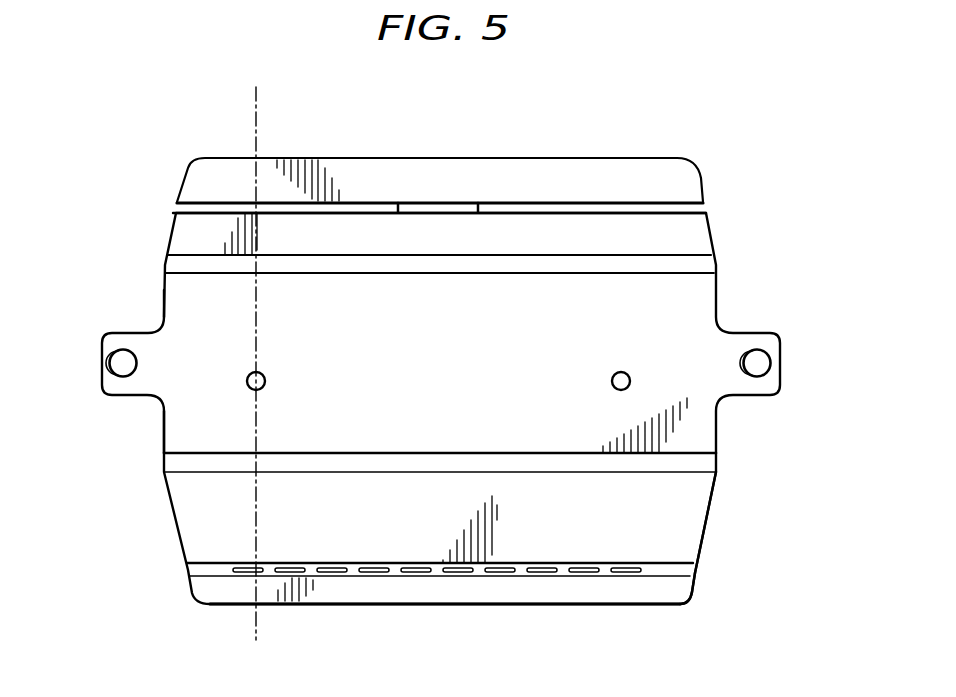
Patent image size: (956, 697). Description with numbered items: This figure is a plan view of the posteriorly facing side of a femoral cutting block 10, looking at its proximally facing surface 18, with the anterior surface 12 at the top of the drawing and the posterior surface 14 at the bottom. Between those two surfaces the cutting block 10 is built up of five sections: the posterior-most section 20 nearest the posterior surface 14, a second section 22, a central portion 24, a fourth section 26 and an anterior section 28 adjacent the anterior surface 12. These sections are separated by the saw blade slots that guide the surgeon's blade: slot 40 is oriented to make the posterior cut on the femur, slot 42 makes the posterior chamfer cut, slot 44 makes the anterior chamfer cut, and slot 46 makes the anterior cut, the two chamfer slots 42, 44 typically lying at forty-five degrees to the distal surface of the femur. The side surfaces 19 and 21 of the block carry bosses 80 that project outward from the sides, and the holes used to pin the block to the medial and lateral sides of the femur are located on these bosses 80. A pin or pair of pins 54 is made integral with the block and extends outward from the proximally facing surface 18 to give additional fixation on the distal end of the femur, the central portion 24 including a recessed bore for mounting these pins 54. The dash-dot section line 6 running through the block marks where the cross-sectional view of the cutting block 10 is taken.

The section line 6- 6 is at (256, 87).
The cutting block 10 is at (530, 127).
The anterior surface 12 is at (647, 157).
The posterior surface 14 is at (595, 605).
The proximally facing surface 18 is at (703, 433).
The side surface 19 is at (707, 510).
The section 20 is at (682, 604).
The side surface 21 is at (163, 445).
The section 22 is at (690, 533).
The central portion 24 is at (157, 333).
The section 26 is at (173, 238).
The section 28 is at (188, 170).
The saw blade slot 40 is at (187, 568).
The saw blade slot 42 is at (165, 462).
The saw blade slot 44 is at (172, 263).
The saw blade slot 46 is at (177, 204).
The pin 54 is at (627, 374).
The boss 80 is at (103, 394).